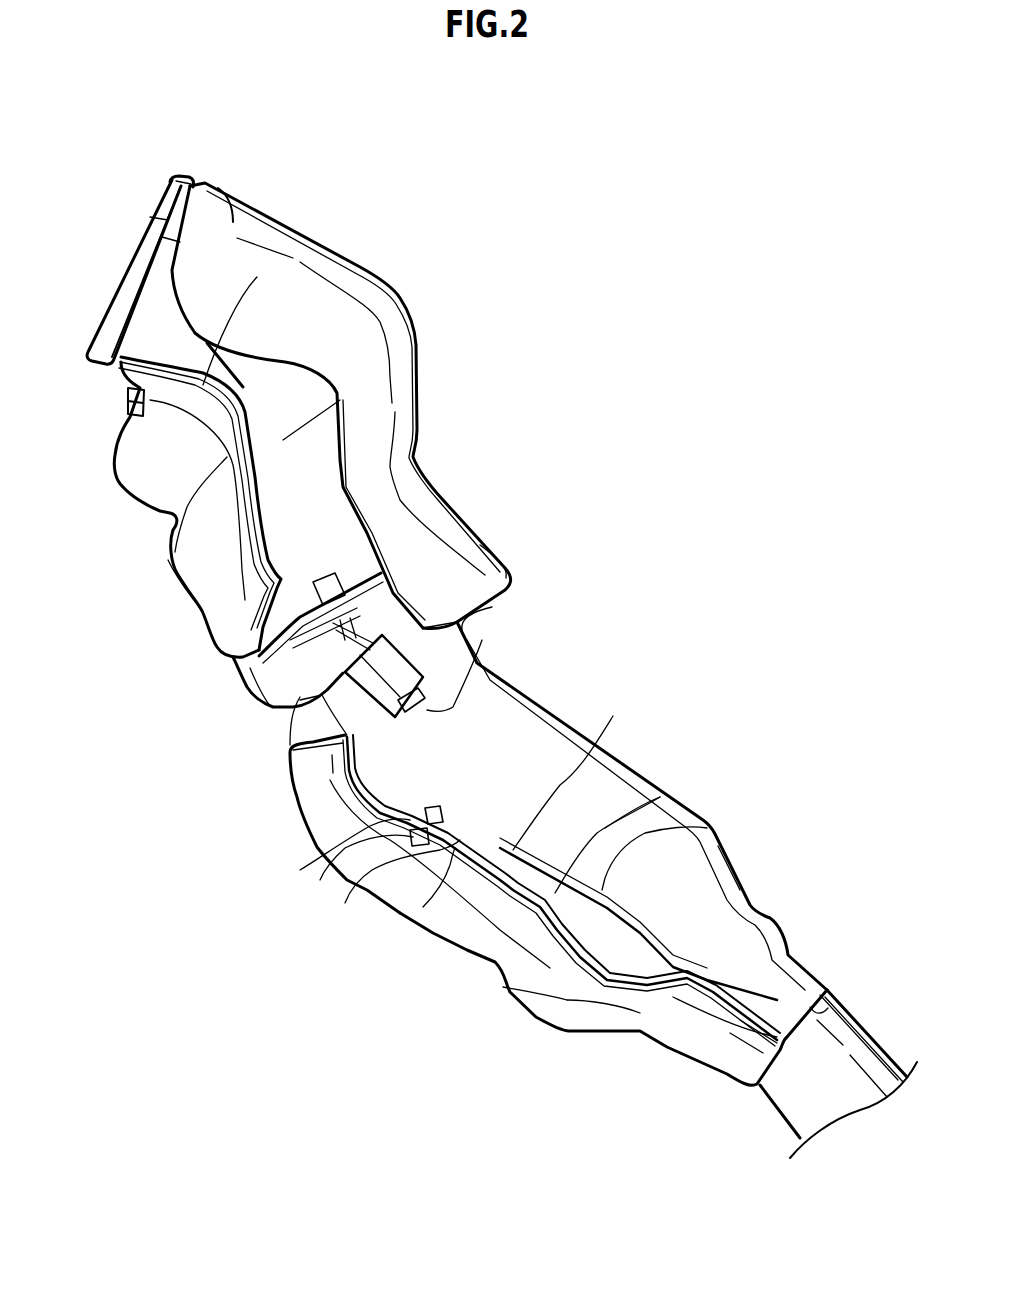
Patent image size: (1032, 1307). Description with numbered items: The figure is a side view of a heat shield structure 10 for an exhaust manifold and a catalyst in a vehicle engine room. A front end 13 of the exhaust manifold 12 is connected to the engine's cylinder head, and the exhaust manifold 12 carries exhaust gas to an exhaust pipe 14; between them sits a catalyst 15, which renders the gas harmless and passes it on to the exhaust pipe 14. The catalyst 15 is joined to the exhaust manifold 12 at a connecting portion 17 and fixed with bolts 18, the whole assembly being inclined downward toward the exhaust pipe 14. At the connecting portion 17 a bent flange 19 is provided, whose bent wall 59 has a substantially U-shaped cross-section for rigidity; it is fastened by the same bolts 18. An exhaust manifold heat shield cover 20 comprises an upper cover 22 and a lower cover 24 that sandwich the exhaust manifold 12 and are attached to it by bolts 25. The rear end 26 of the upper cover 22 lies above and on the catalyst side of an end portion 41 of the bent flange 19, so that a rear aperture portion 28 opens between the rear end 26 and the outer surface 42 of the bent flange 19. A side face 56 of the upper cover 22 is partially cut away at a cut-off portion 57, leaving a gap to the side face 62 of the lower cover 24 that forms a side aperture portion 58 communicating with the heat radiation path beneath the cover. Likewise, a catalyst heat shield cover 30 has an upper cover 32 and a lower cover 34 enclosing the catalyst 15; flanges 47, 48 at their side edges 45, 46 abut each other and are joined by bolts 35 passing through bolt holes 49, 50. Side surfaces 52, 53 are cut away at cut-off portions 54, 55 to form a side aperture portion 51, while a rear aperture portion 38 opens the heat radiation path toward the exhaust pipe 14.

The heat shield structure 10 is at (340, 183).
The exhaust manifold 12 is at (152, 320).
The front end 13 is at (178, 186).
The exhaust pipe 14 is at (867, 1047).
The catalyst 15 is at (647, 960).
The connecting portion 17 is at (233, 657).
The bolts 18 is at (482, 640).
The bent flange 19 is at (250, 682).
The exhaust manifold heat shield cover 20 is at (70, 465).
The upper cover 22 is at (211, 358).
The lower cover 24 is at (150, 493).
The bolts 25 is at (128, 402).
The rear end 26 is at (506, 576).
The rear aperture portion 28 is at (492, 607).
The catalyst heat shield cover 30 is at (493, 1063).
The upper cover 32 is at (450, 923).
The lower cover 34 is at (480, 933).
The bolts 35 is at (345, 903).
The rear aperture portion 38 is at (822, 1005).
The end portion 41 is at (463, 631).
The outer surface 42 is at (270, 706).
The side edge 45 is at (585, 765).
The side edge 46 is at (423, 907).
The flange 47 is at (403, 810).
The flange 48 is at (303, 869).
The bolt hole 49 is at (425, 812).
The bolt hole 50 is at (320, 880).
The side aperture portion 51 is at (723, 860).
The side surface 52 is at (707, 828).
The side surface 53 is at (530, 927).
The cut-off portion 54 is at (660, 797).
The cut-off portion 55 is at (603, 953).
The side face 56 is at (367, 457).
The cut-off portion 57 is at (335, 398).
The side aperture portion 58 is at (340, 420).
The bent wall 59 is at (310, 700).
The side face 62 is at (175, 567).